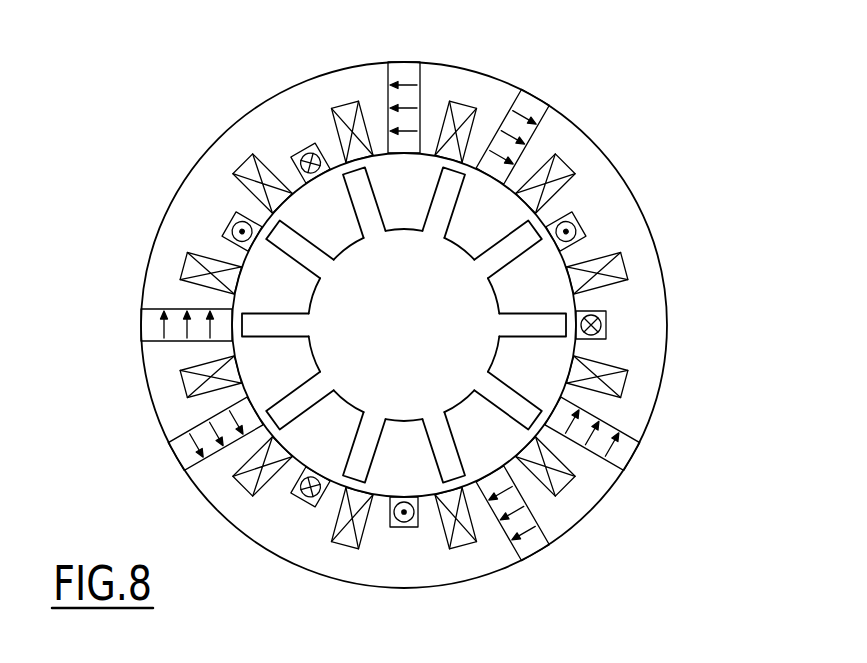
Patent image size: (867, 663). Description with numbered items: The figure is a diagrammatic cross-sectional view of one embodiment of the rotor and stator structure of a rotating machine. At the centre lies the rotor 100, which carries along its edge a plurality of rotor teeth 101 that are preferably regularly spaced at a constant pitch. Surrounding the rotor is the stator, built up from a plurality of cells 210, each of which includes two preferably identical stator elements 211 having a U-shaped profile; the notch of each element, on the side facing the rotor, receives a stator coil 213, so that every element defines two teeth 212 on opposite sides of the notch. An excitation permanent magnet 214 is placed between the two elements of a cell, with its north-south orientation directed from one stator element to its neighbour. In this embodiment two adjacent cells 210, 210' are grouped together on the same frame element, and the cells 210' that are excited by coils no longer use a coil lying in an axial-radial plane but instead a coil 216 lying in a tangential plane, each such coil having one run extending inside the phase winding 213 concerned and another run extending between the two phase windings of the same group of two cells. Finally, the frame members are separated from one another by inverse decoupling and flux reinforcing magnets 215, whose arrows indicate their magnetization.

The rotor 100 is at (423, 323).
The rotor teeth 101 is at (510, 234).
The cell 210 is at (357, 325).
The cell 210' is at (263, 116).
The stator element 211 is at (185, 414).
The tooth 212 is at (325, 214).
The stator coil 213 is at (363, 128).
The excitation permanent magnet 214 is at (144, 329).
The inverse decoupling and flux reinforcing magnet 215 is at (408, 62).
The coil 216 is at (309, 152).